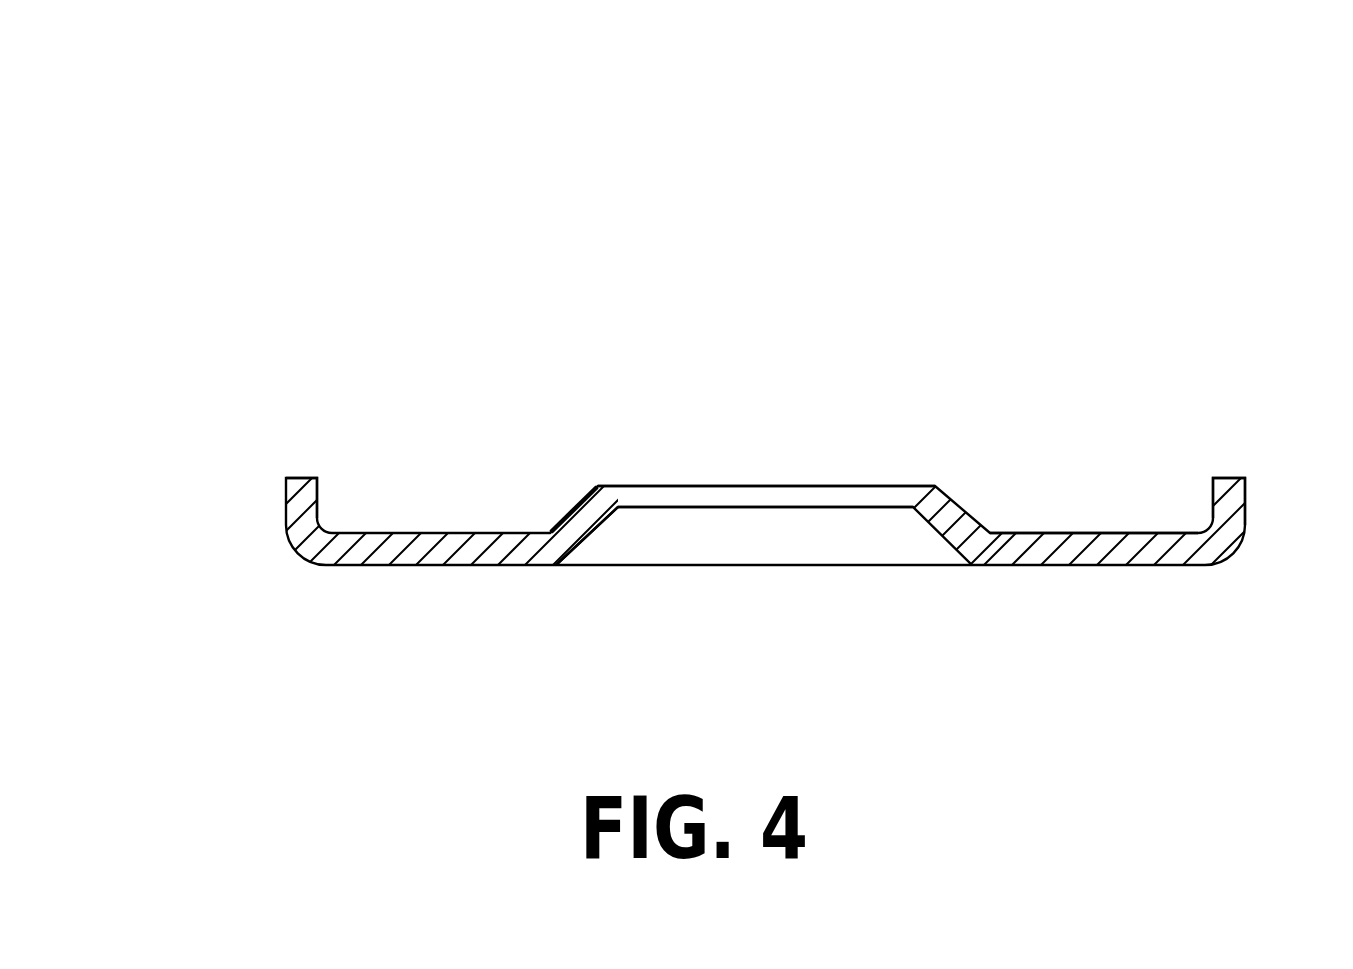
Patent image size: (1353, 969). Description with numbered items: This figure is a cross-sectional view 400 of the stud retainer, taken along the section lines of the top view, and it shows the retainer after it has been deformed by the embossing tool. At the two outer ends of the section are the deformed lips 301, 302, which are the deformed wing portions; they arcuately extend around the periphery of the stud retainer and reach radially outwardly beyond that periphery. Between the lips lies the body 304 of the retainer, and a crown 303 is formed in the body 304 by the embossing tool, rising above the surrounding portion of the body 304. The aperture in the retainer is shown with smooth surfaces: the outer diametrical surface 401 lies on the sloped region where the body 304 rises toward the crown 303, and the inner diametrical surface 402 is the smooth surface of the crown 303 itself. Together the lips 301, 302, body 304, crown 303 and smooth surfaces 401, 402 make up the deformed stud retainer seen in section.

The cross-sectional view 400 is at (824, 200).
The deformed lip 301 is at (303, 493).
The deformed lip 302 is at (1230, 498).
The crown 303 is at (572, 504).
The body 304 is at (1072, 532).
The outer diametrical surface 401 is at (594, 485).
The inner diametrical surface 402 is at (630, 508).